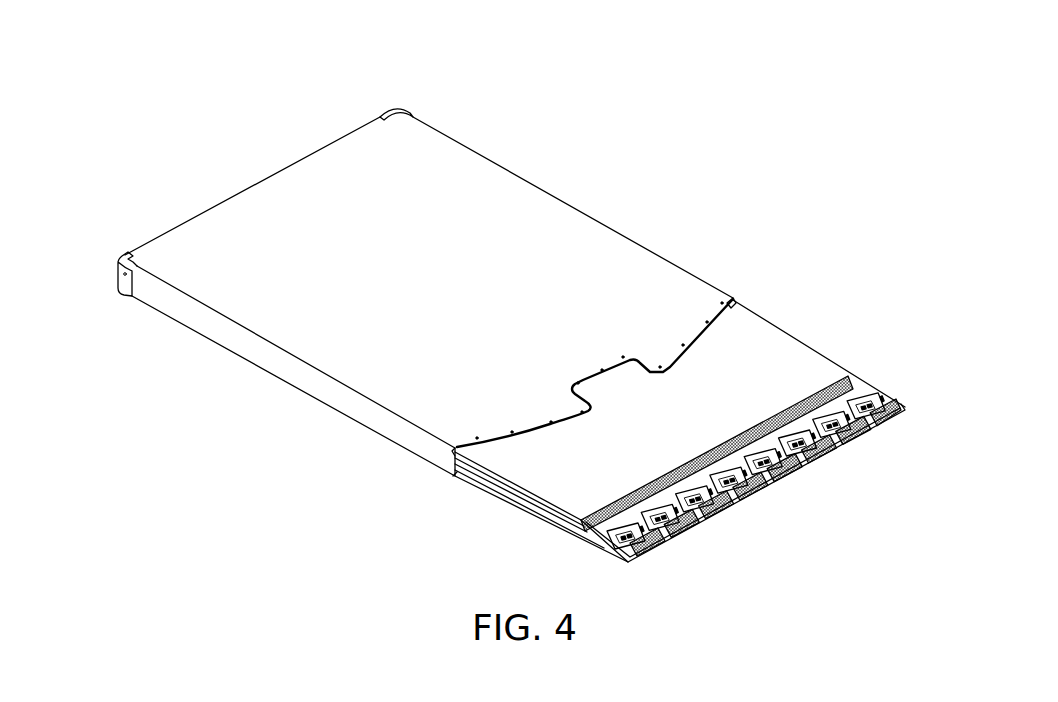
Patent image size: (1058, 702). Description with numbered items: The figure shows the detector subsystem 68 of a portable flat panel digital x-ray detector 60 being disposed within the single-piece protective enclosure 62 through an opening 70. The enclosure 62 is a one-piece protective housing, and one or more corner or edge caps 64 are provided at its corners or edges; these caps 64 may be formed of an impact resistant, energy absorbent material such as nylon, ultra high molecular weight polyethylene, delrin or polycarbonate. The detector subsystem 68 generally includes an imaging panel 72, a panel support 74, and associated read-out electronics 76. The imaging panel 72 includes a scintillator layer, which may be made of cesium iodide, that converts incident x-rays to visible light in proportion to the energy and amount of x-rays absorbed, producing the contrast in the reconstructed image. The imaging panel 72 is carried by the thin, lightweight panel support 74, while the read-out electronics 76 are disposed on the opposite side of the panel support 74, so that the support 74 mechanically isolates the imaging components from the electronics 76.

The portable flat panel digital x-ray detector 60 is at (697, 79).
The single-piece protective enclosure 62 is at (507, 167).
The corner or edge caps 64 is at (393, 107).
The detector subsystem 68 is at (853, 349).
The opening 70 is at (733, 307).
The imaging panel 72 is at (772, 340).
The panel support 74 is at (862, 387).
The read-out electronics 76 is at (697, 530).